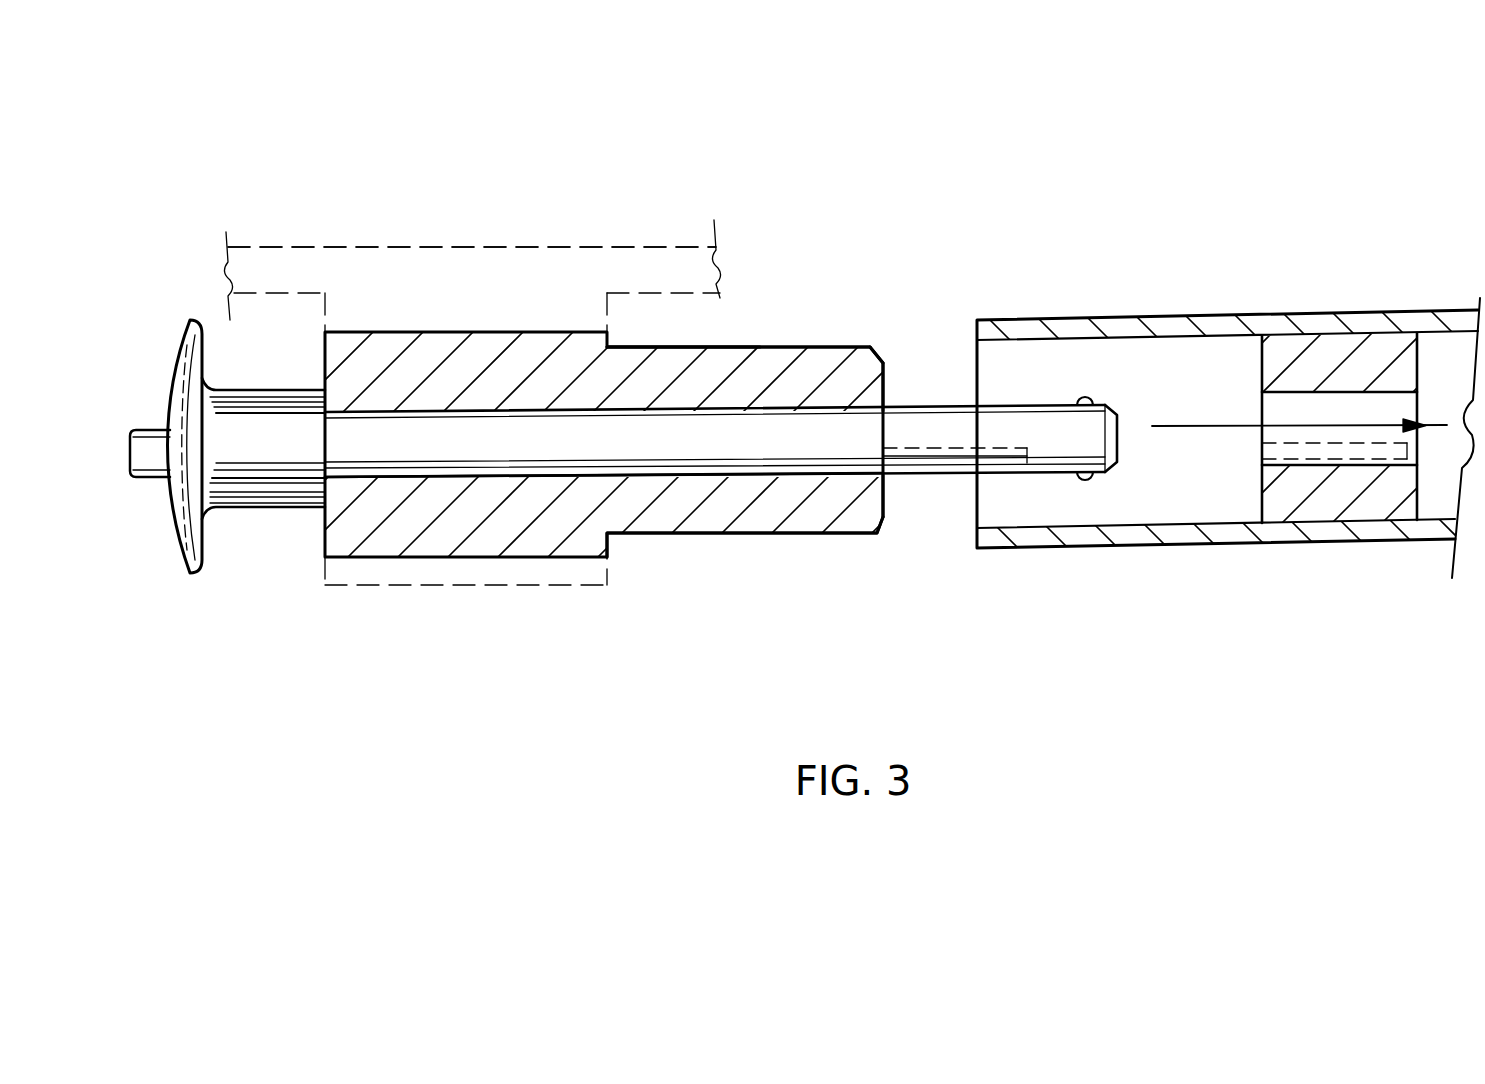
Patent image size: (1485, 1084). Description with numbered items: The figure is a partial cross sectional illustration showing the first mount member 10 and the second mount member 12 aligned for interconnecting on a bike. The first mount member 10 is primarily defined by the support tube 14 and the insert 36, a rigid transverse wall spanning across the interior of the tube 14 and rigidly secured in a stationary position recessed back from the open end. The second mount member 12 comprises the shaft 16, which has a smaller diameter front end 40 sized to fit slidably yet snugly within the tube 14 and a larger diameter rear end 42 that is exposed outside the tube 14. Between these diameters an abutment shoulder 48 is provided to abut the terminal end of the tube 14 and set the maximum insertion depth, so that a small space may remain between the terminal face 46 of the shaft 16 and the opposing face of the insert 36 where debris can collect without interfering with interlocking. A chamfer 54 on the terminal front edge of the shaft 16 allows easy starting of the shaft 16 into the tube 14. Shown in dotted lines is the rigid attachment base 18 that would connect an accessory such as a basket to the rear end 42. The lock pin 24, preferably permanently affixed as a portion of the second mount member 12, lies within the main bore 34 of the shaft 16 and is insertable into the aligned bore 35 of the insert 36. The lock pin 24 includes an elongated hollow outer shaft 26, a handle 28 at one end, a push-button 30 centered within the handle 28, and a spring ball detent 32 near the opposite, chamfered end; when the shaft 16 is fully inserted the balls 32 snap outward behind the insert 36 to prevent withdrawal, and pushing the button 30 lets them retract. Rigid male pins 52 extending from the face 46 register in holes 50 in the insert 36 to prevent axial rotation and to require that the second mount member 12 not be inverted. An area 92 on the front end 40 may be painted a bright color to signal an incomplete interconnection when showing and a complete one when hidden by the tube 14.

The first mount member 10 is at (795, 397).
The second mount member 12 is at (483, 222).
The support tube 14 is at (1040, 320).
The shaft 16 is at (777, 348).
The attachment base 18 is at (593, 243).
The lock pin 24 is at (415, 447).
The outer shaft 26 is at (493, 447).
The handle 28 is at (200, 575).
The push-button 30 is at (152, 482).
The spring ball detent 32 is at (1083, 481).
The main bore 34 is at (653, 478).
The bore 35 is at (1375, 430).
The insert 36 is at (1275, 505).
The front end 40 is at (843, 347).
The rear end 42 is at (405, 332).
The face 46 is at (885, 485).
The abutment shoulder 48 is at (612, 341).
The holes 50 is at (1337, 450).
The pins 52 is at (948, 448).
The chamfer 54 is at (886, 352).
The signal area 92 is at (757, 533).